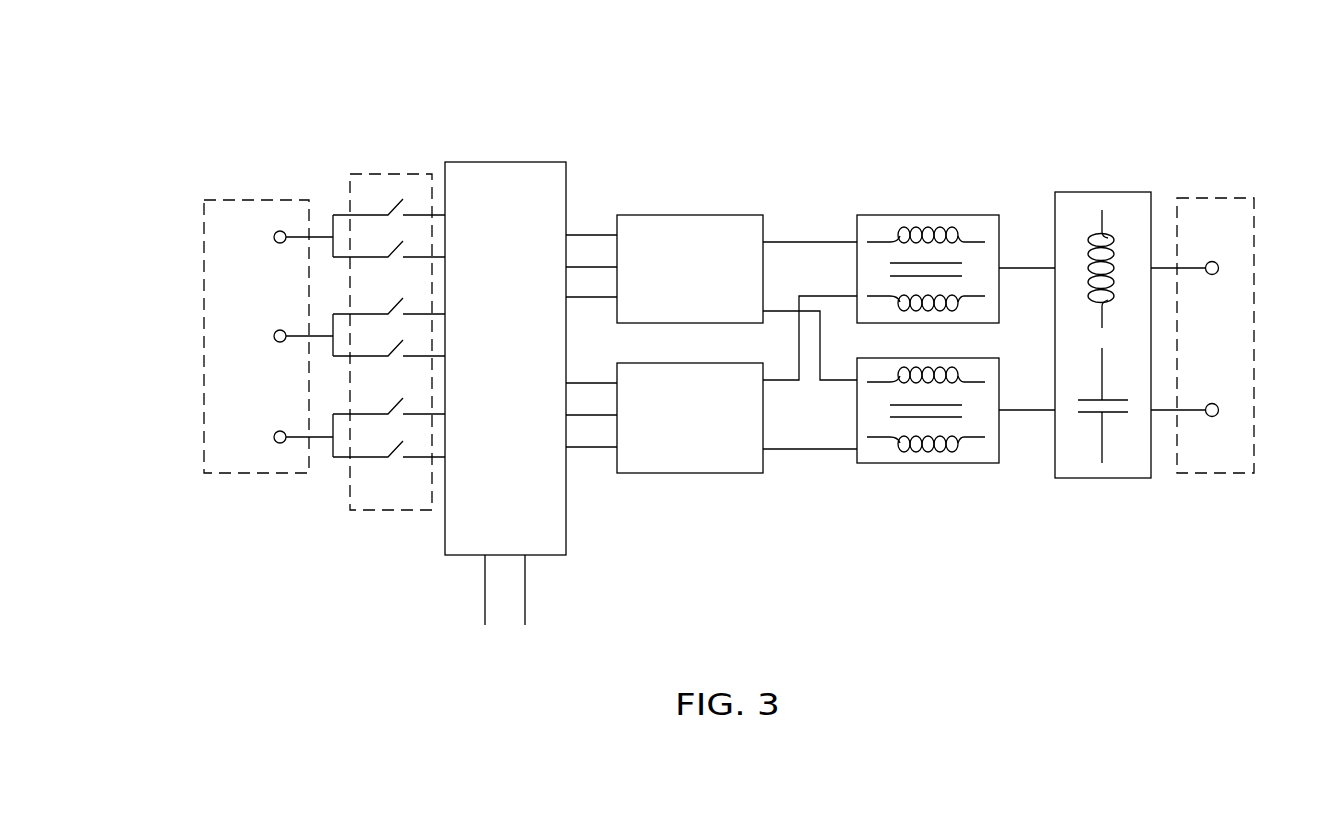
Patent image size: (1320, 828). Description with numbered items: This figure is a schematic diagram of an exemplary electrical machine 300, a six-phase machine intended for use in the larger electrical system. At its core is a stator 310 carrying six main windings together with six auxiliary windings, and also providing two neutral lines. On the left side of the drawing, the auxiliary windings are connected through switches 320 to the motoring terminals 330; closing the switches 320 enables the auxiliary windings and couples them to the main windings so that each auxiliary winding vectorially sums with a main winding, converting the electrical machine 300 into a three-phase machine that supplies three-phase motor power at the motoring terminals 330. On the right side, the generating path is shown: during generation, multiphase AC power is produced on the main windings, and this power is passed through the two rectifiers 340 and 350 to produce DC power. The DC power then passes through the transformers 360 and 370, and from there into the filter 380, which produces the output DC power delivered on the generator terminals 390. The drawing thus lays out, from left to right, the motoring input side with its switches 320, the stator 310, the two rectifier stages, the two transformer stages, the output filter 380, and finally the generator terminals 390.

The electrical machine 300 is at (255, 77).
The stator 310 is at (505, 162).
The switches 320 is at (390, 174).
The motoring terminals 330 is at (260, 200).
The rectifier 340 is at (695, 473).
The rectifier 350 is at (695, 215).
The transformer 360 is at (928, 463).
The transformer 370 is at (928, 215).
The filter 380 is at (1103, 192).
The generator terminals 390 is at (1215, 198).